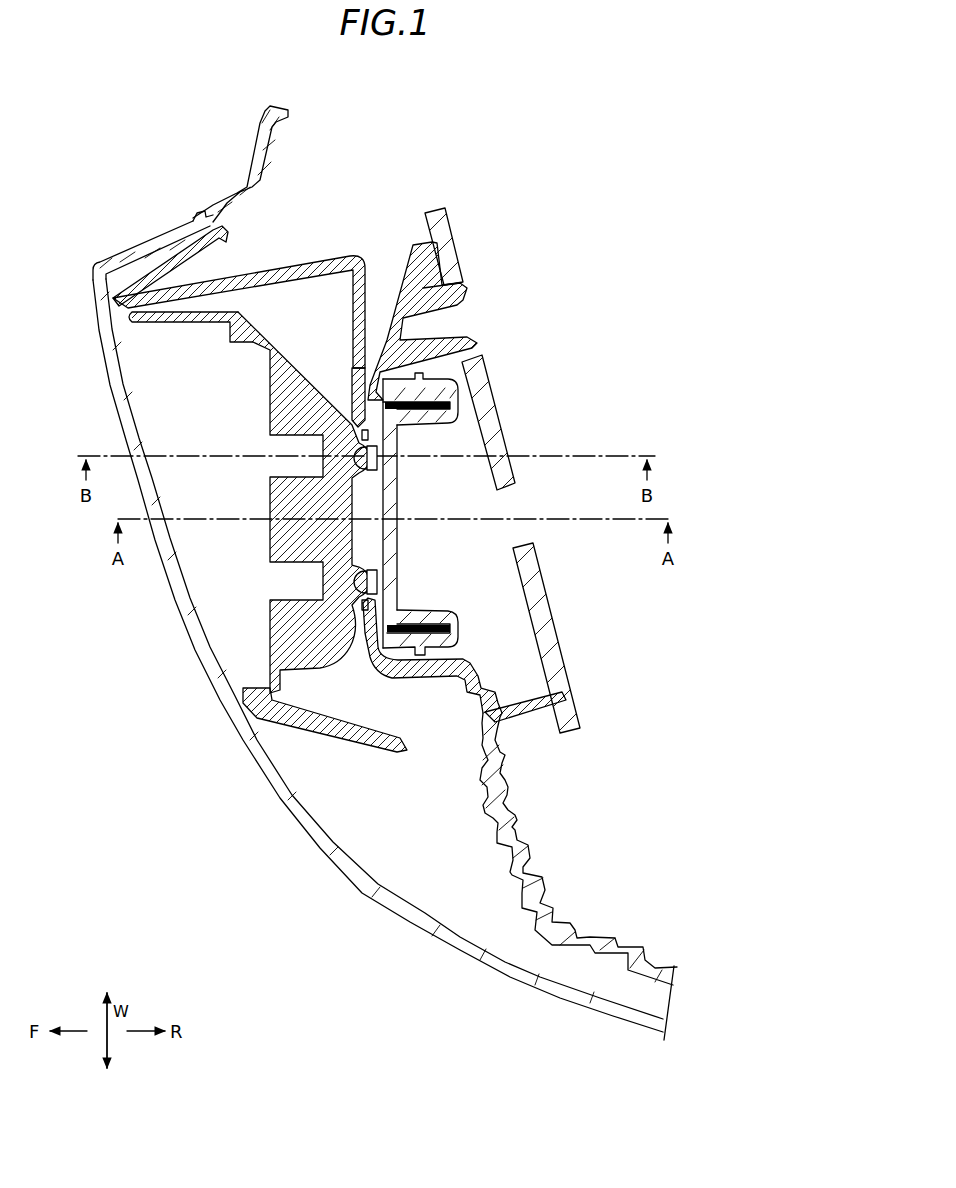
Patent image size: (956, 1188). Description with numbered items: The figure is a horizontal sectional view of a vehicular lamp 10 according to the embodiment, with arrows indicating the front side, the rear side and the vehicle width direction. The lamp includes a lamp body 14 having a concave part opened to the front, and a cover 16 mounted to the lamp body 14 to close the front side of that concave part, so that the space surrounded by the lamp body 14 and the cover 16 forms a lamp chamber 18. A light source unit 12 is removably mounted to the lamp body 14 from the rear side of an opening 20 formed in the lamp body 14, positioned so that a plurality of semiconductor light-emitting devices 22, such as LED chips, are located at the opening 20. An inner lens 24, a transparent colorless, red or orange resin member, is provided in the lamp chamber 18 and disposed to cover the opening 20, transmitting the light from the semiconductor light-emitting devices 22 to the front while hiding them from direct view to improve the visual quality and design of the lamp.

The vehicular lamp 10 is at (305, 1003).
The light source unit 12 is at (404, 578).
The lamp body 14 is at (296, 262).
The cover 16 is at (104, 262).
The lamp chamber 18 is at (237, 591).
The opening 20 is at (362, 605).
The semiconductor light-emitting devices 22 is at (358, 425).
The inner lens 24 is at (187, 323).